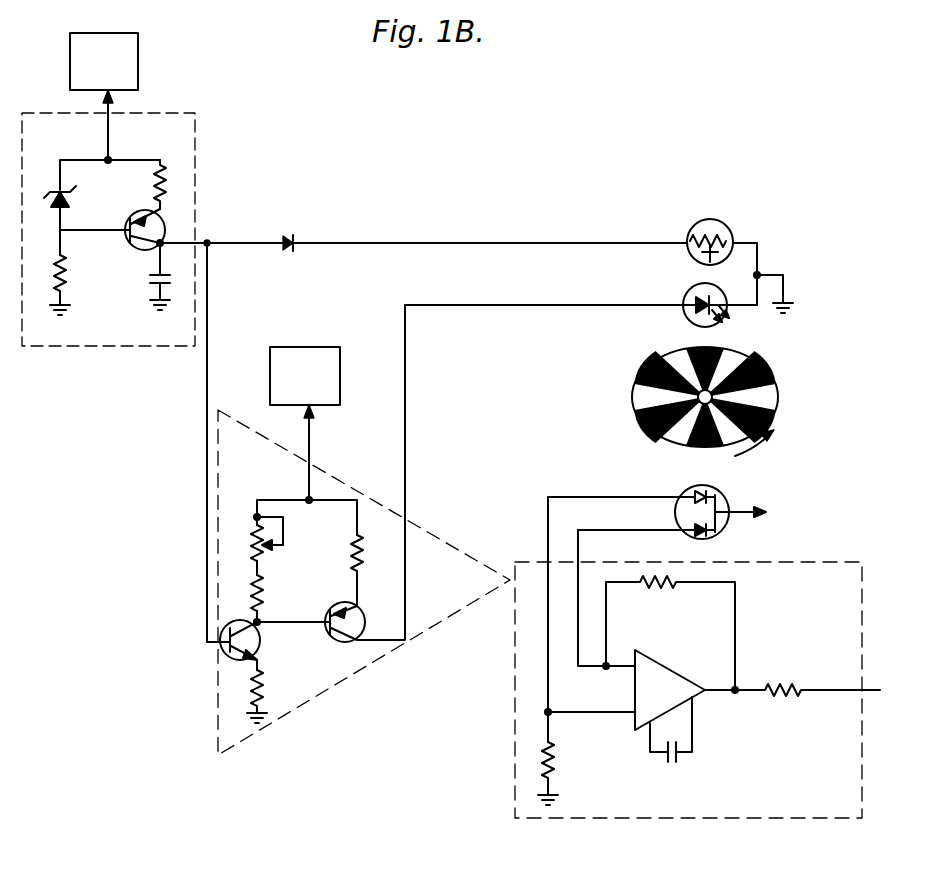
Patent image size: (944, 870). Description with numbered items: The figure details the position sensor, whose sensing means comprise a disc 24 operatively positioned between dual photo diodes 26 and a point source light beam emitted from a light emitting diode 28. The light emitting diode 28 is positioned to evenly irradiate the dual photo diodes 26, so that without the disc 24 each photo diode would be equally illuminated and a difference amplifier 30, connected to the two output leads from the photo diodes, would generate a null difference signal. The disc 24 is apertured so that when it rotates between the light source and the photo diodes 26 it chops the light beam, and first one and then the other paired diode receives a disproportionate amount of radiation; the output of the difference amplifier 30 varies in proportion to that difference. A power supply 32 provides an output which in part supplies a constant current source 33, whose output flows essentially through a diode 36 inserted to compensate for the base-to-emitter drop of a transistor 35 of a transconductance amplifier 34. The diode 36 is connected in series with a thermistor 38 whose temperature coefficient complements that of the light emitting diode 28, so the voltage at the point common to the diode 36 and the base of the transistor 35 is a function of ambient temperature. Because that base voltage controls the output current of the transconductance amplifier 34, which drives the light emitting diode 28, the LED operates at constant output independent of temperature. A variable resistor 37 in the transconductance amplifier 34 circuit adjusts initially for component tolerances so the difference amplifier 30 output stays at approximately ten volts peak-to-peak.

The disc 24 is at (780, 396).
The dual photo diodes 26 is at (731, 500).
The light emitting diode 28 is at (726, 316).
The difference amplifier 30 is at (792, 560).
The power supply 32 is at (139, 60).
The constant current source 33 is at (97, 349).
The transconductance amplifier 34 is at (272, 720).
The transistor 35 is at (236, 662).
The diode 36 is at (287, 232).
The variable resistor 37 is at (285, 531).
The thermistor 38 is at (726, 225).